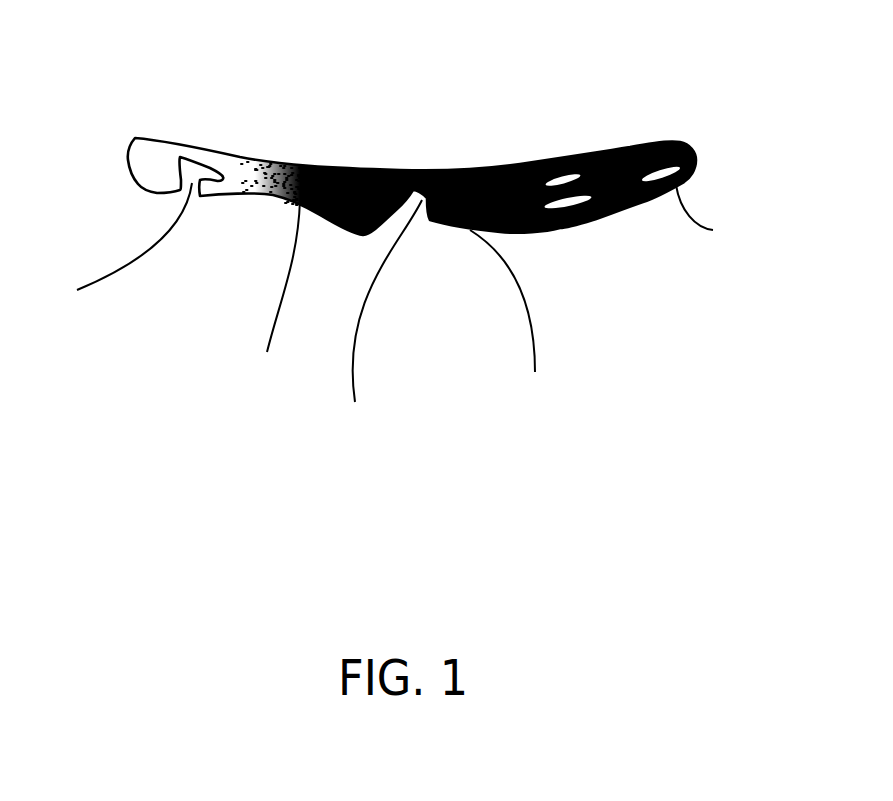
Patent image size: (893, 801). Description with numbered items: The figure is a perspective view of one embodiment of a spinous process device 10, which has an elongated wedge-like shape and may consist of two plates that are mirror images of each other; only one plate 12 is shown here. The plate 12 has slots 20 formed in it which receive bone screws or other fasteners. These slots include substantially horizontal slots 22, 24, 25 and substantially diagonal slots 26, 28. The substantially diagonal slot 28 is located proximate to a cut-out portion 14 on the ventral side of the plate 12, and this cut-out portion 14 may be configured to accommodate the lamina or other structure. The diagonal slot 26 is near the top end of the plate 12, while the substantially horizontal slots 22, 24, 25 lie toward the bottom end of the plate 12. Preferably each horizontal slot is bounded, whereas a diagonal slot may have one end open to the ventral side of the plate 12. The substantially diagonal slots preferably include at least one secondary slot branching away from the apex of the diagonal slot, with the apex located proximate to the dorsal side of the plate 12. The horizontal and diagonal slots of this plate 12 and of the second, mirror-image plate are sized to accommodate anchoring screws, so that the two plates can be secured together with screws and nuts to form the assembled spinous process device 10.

The spinous process device 10 is at (210, 282).
The plate 12 is at (270, 299).
The cut-out portion 14 is at (506, 330).
The slots 20 is at (660, 190).
The substantially horizontal slot 22 is at (727, 220).
The substantially horizontal slot 24 is at (582, 215).
The substantially horizontal slot 25 is at (538, 163).
The diagonal slot 26 is at (104, 250).
The substantially diagonal slot 28 is at (378, 325).